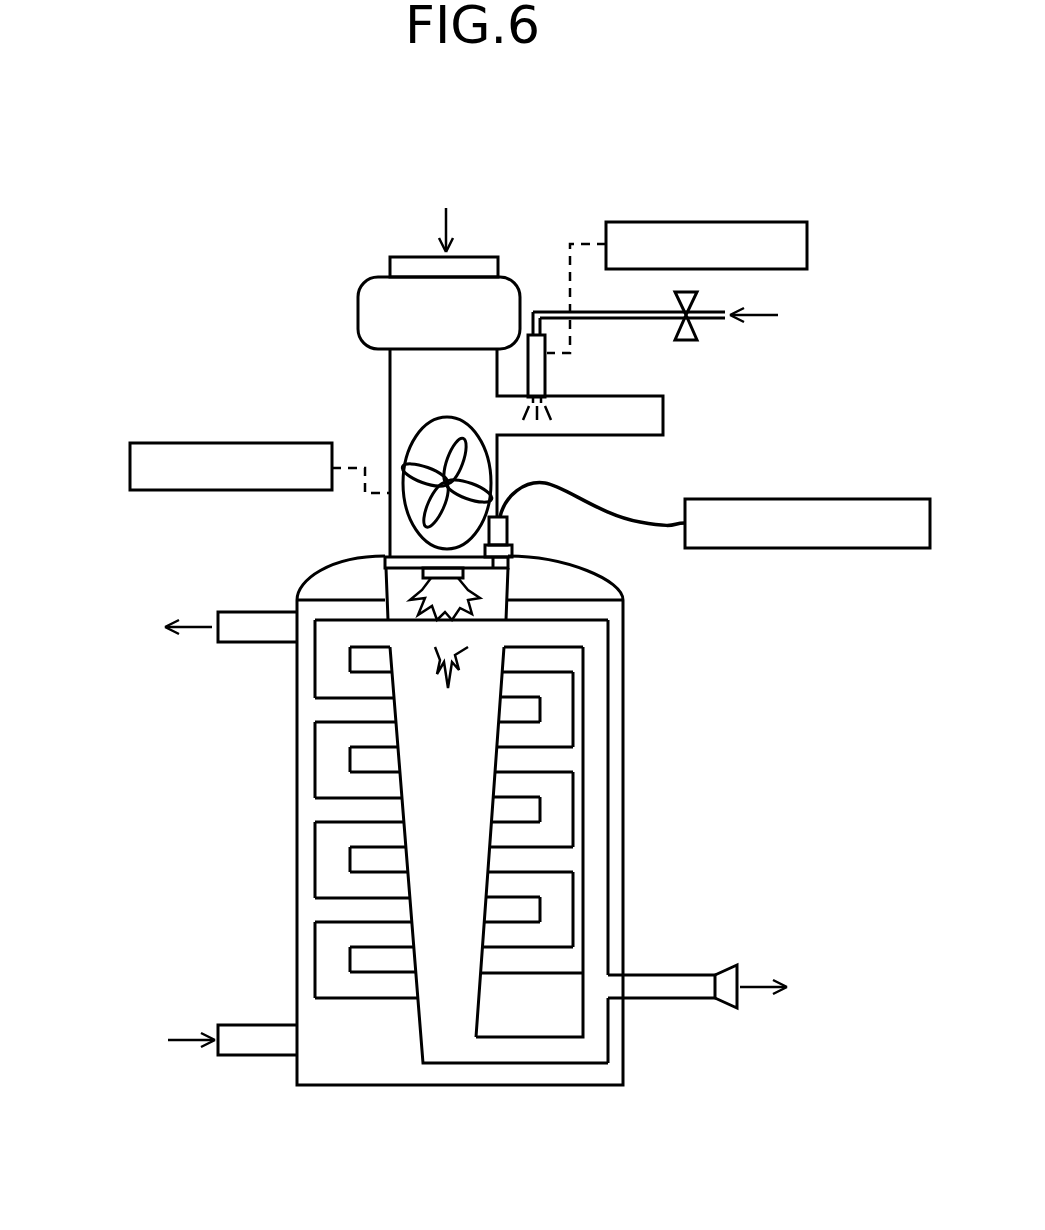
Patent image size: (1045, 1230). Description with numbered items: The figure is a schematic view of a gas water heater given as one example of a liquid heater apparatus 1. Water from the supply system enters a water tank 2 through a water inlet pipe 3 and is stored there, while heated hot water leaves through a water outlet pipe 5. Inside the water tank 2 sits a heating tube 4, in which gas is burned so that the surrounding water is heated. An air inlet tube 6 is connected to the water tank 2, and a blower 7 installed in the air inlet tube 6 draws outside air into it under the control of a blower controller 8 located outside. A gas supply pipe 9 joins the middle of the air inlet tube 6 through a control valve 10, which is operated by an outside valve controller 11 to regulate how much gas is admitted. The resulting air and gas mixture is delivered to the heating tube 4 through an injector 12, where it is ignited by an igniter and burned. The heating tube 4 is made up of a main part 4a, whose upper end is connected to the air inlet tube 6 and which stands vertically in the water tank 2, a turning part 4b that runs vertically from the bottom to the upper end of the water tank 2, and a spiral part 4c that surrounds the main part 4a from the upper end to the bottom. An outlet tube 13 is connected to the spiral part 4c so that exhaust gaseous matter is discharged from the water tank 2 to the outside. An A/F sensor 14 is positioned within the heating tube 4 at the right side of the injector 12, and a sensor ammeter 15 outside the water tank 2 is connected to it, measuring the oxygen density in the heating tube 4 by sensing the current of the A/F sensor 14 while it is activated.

The liquid heater apparatus 1 is at (496, 139).
The water tank 2 is at (624, 800).
The water inlet pipe 3 is at (257, 1025).
The heating tube 4 is at (464, 841).
The main part 4a is at (478, 1018).
The turning part 4b is at (608, 756).
The spiral part 4c is at (317, 760).
The water outlet pipe 5 is at (247, 612).
The air inlet tube 6 is at (390, 378).
The blower 7 is at (445, 418).
The blower controller 8 is at (237, 443).
The gas supply pipe 9 is at (714, 320).
The control valve 10 is at (545, 370).
The valve controller 11 is at (697, 222).
The injector 12 is at (383, 577).
The outlet tube 13 is at (683, 975).
The A/F sensor 14 is at (512, 532).
The sensor ammeter 15 is at (745, 499).